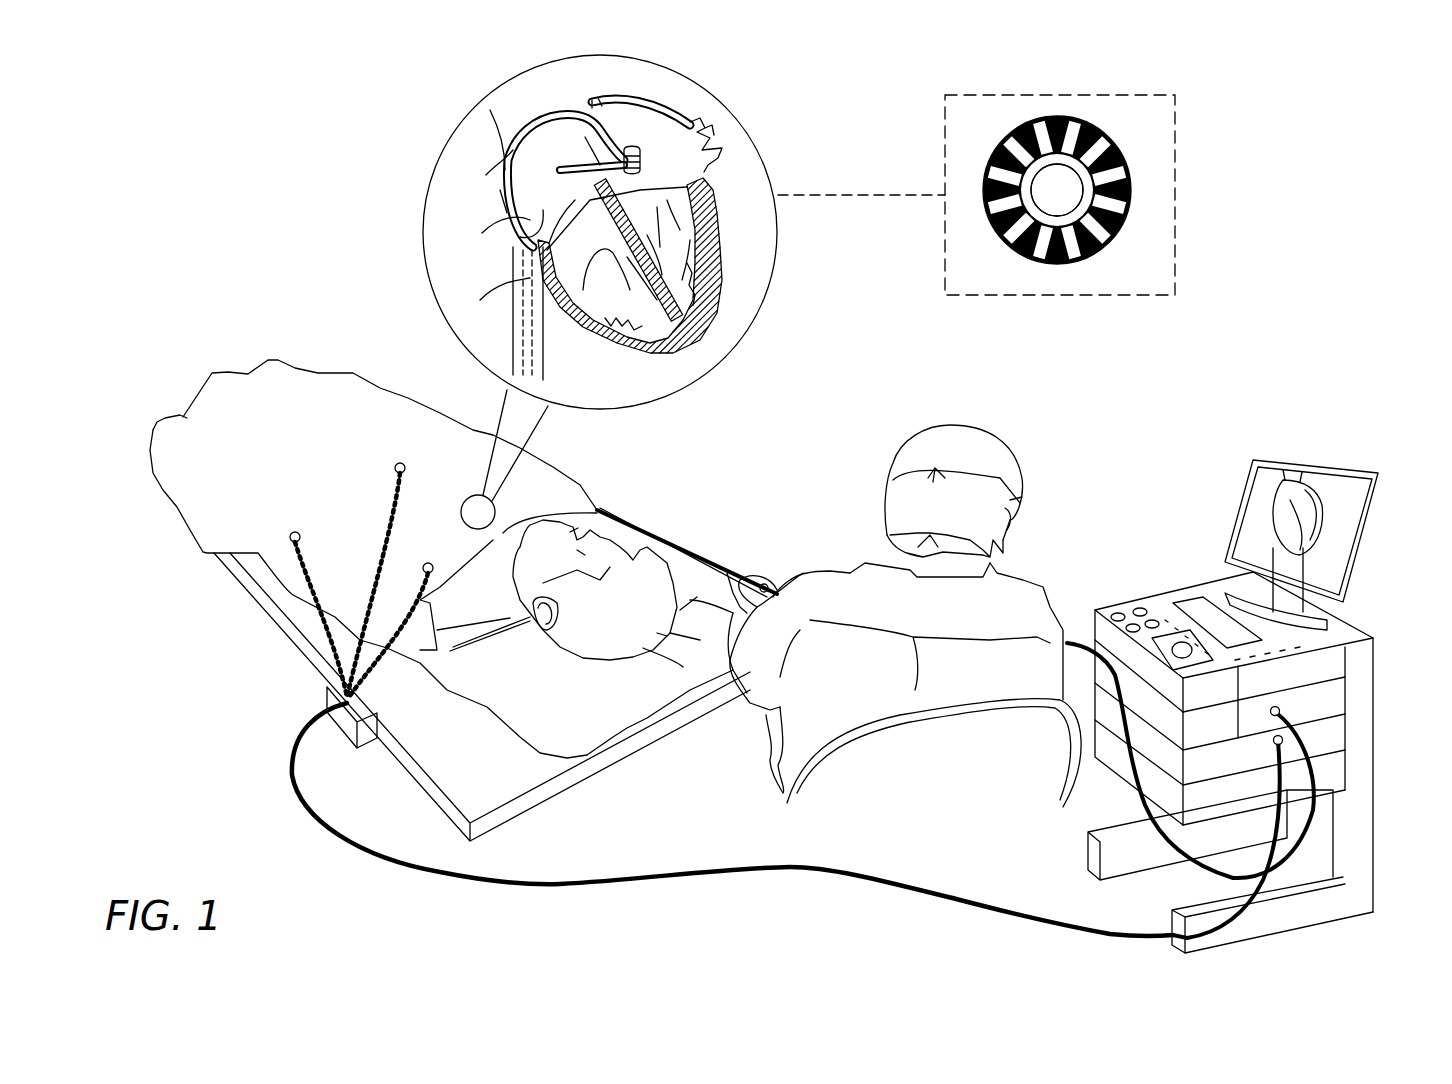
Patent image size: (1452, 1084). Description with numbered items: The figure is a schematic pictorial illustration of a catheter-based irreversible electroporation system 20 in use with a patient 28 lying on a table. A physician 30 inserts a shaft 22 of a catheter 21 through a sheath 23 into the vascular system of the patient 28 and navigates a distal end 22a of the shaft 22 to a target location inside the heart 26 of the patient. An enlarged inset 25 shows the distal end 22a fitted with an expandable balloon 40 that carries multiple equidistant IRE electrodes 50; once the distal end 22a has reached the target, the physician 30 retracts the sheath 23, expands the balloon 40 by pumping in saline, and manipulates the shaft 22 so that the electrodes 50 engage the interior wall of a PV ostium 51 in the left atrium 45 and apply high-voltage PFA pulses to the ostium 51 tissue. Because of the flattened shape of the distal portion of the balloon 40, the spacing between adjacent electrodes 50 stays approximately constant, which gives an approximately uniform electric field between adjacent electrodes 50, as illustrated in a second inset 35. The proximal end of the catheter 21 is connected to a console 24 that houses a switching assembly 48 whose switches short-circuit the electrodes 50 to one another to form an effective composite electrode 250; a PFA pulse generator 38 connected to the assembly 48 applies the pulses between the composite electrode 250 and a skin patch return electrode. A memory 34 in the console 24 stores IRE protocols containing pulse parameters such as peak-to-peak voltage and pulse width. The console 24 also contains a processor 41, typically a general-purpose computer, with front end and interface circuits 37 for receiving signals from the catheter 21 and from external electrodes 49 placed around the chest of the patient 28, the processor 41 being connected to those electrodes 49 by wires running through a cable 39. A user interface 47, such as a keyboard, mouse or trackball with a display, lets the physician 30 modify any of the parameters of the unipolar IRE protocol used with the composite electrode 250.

The irreversible electroporation system 20 is at (143, 86).
The catheter 21 is at (808, 537).
The shaft 22 is at (1080, 610).
The distal end 22a is at (609, 108).
The sheath 23 is at (676, 520).
The console 24 is at (1392, 620).
The inset 25 is at (423, 233).
The heart 26 is at (720, 235).
The patient 28 is at (627, 660).
The physician 30 is at (1067, 640).
The memory 34 is at (1232, 705).
The inset 35 is at (988, 130).
The front end and interface circuits 37 is at (1337, 730).
The PFA pulse generator 38 is at (1337, 695).
The cable 39 is at (292, 793).
The balloon 40 is at (665, 147).
The processor 41 is at (1337, 660).
The left atrium 45 is at (585, 137).
The user interface 47 is at (1188, 556).
The switching assembly 48 is at (1232, 743).
The external electrodes 49 is at (426, 563).
The electrodes 50 is at (916, 212).
The PV ostium 51 is at (722, 132).
The composite electrode 250 is at (1147, 195).